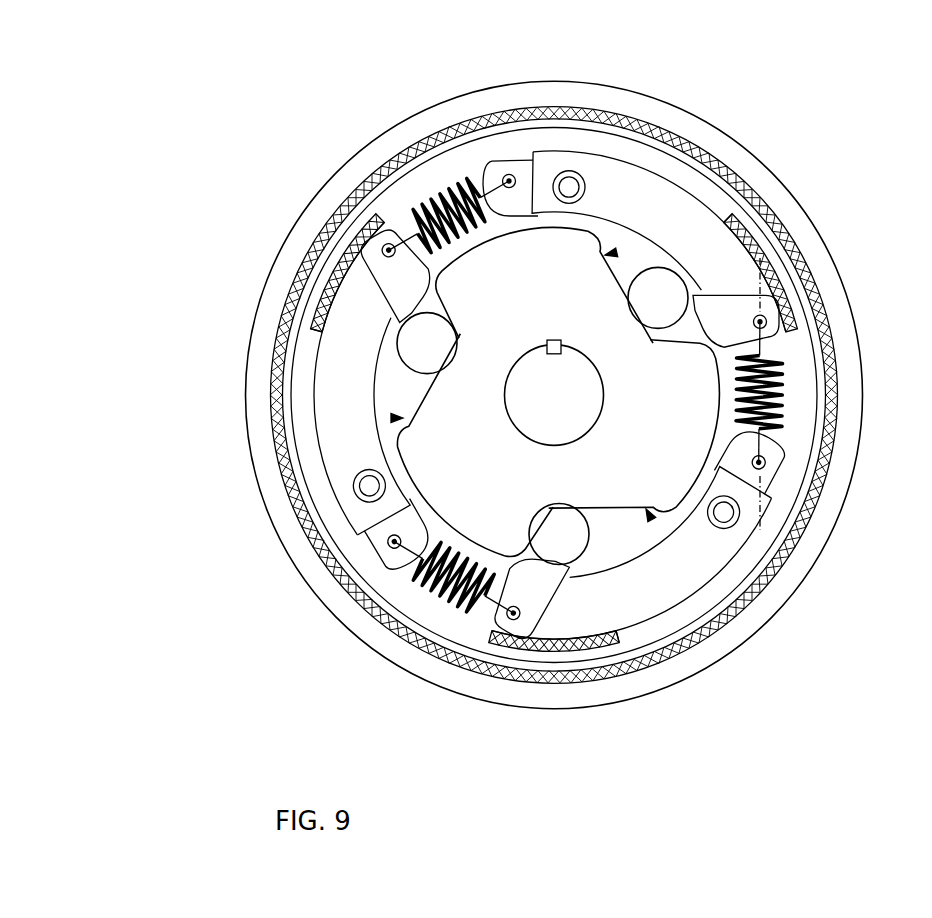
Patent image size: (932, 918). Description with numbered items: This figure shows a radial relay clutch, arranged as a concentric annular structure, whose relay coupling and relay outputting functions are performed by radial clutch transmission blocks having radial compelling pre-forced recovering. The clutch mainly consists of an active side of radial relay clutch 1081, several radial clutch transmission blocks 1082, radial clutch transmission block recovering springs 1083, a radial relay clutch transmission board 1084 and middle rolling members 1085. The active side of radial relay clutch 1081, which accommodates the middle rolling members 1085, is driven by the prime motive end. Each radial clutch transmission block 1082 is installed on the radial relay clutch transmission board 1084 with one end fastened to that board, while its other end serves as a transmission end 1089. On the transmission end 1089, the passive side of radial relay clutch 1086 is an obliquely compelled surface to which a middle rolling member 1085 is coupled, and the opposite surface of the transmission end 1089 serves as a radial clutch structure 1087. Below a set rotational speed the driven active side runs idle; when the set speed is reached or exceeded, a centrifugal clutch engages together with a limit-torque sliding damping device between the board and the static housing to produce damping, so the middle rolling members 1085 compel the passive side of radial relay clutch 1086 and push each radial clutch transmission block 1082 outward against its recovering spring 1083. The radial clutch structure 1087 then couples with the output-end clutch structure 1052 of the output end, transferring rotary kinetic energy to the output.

The output-end clutch structure 1052 is at (435, 104).
The active side of radial relay clutch 1081 is at (732, 255).
The radial clutch transmission block 1082 is at (526, 409).
The radial clutch transmission block recovering spring 1083 is at (427, 207).
The radial relay clutch transmission board 1084 is at (535, 142).
The middle rolling member 1085 is at (430, 337).
The passive side of radial relay clutch 1086 is at (650, 257).
The radial clutch structure 1087 is at (783, 302).
The transmission end 1089 is at (607, 253).